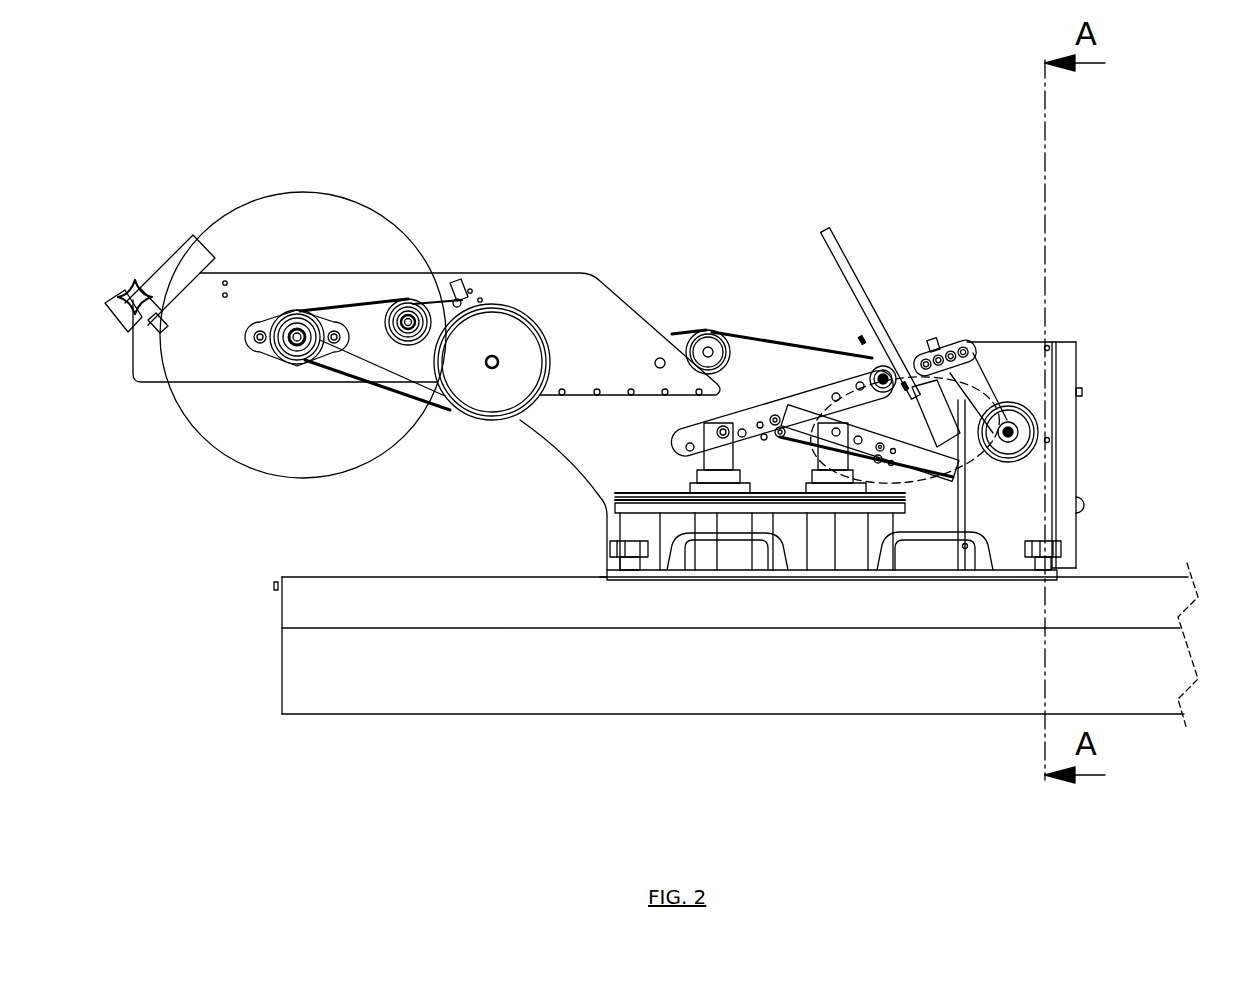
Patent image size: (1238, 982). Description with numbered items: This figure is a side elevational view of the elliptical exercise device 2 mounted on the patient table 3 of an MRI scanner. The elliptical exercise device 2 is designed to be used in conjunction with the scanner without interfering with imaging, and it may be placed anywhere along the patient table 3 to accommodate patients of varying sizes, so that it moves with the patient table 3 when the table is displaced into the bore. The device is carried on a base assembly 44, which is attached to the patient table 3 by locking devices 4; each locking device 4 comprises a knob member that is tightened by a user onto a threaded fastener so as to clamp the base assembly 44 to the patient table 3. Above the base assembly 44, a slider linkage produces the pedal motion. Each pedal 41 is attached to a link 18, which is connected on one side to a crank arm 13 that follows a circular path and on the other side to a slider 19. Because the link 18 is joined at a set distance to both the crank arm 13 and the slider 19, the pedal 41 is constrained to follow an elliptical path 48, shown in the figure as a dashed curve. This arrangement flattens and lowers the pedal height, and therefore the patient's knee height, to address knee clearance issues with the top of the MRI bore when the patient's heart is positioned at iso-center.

The elliptical exercise device 2 is at (426, 279).
The patient table 3 is at (677, 603).
The locking device 4 is at (644, 366).
The crank arm 13 is at (973, 312).
The link 18 is at (782, 311).
The slider 19 is at (734, 328).
The pedal 41 is at (890, 305).
The base assembly 44 is at (828, 688).
The elliptical path 48 is at (948, 603).